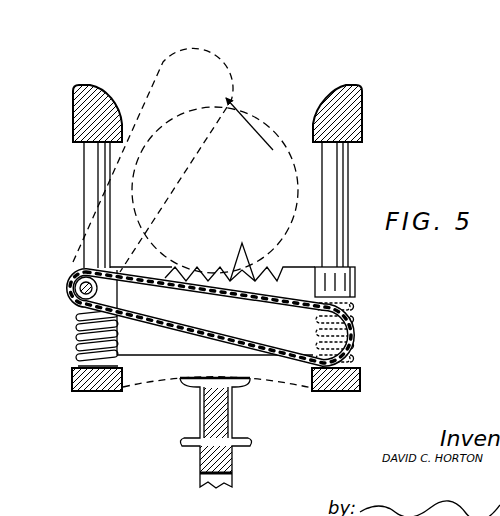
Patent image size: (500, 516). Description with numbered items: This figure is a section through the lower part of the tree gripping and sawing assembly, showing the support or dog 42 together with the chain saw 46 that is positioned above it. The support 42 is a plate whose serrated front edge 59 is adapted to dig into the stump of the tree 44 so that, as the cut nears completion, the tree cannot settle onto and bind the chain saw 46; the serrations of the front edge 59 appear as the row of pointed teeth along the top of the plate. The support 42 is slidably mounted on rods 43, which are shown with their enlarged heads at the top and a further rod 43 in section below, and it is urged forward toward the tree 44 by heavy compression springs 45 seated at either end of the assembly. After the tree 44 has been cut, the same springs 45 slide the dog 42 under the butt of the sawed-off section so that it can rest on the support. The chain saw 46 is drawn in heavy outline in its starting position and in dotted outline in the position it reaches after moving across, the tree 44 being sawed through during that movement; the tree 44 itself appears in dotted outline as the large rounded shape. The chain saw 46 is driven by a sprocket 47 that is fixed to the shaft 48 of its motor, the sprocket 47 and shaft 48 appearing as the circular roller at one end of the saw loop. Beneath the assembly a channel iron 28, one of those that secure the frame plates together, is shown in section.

The channel irons 28 is at (245, 413).
The support or dog 42 is at (301, 278).
The rods 43 is at (92, 166).
The tree 44 is at (265, 125).
The compression springs 45 is at (76, 331).
The chain saw 46 is at (165, 62).
The sprocket 47 is at (76, 276).
The shaft 48 is at (80, 288).
The serrated front edge 59 is at (242, 252).